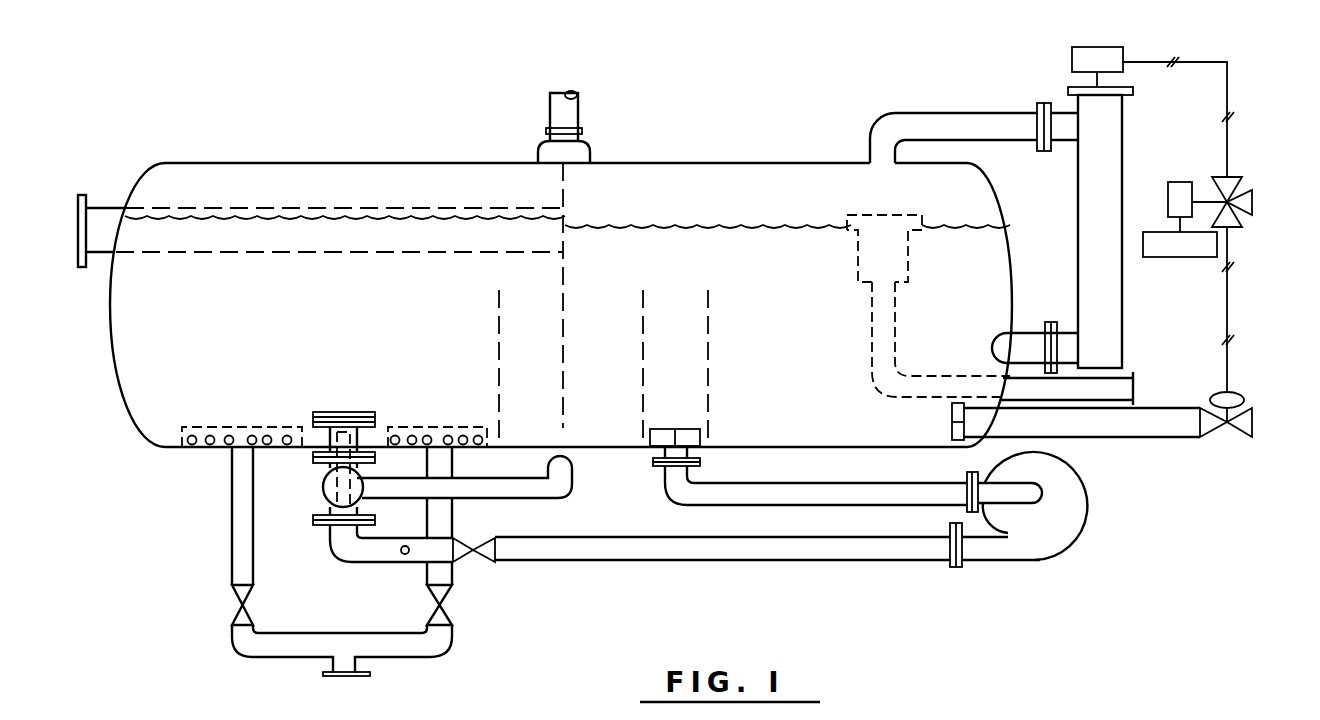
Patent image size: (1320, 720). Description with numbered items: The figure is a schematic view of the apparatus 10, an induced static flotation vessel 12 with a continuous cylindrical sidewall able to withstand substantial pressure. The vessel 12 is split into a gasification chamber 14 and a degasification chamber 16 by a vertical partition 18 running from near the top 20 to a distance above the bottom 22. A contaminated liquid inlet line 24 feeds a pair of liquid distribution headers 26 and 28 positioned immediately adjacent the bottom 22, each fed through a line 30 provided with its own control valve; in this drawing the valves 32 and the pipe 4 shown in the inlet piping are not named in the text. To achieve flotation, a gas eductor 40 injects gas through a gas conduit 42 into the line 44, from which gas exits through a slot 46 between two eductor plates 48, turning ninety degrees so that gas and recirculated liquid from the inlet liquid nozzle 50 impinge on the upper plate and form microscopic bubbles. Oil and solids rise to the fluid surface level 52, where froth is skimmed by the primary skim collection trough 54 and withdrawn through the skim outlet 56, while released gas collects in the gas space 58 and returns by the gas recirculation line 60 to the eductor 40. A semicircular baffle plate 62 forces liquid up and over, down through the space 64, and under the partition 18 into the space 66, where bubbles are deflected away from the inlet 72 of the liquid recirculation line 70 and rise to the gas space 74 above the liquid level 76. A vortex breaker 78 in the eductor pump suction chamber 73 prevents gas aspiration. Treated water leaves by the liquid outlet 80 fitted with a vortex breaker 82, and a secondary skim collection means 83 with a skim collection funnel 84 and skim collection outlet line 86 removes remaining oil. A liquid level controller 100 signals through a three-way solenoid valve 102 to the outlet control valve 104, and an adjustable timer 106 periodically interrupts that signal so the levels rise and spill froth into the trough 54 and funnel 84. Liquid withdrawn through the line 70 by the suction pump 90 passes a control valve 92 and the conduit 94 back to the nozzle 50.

The apparatus 10 is at (817, 106).
The induced static flotation vessel 12 is at (773, 162).
The gasification chamber 14 is at (303, 297).
The degasification chamber 16 is at (768, 327).
The vertical partition 18 is at (563, 270).
The top 20 is at (440, 163).
The bottom 22 is at (175, 447).
The contaminated liquid inlet line 24 is at (330, 670).
The liquid distribution header 26 is at (185, 427).
The liquid distribution header 28 is at (465, 425).
The line 30 is at (232, 490).
The valve 32 is at (232, 600).
The pipe 4 is at (452, 467).
The gas eductor 40 is at (346, 412).
The gas conduit 42 is at (323, 493).
The line 44 is at (352, 440).
The slot 46 is at (313, 420).
The eductor plates 48 is at (372, 412).
The inlet liquid nozzle 50 is at (313, 457).
The fluid surface level 52 is at (232, 206).
The primary skim collection trough 54 is at (292, 214).
The skim outlet 56 is at (112, 205).
The gas space 58 is at (414, 197).
The gas recirculation line 60 is at (575, 112).
The baffle plate 62 is at (494, 302).
The space 64 is at (518, 327).
The space 66 is at (591, 327).
The liquid recirculation line 70 is at (790, 483).
The inlet 72 is at (653, 465).
The eductor pump suction chamber 73 is at (666, 327).
The gas space 74 is at (706, 201).
The liquid level 76 is at (632, 222).
The vortex breaker 78 is at (690, 429).
The liquid outlet 80 is at (1105, 437).
The vortex breaker 82 is at (952, 420).
The secondary skim collection means 83 is at (862, 258).
The skim collection funnel 84 is at (893, 215).
The skim collection outlet line 86 is at (1133, 372).
The suction pump 90 is at (1080, 530).
The control valve 92 is at (475, 562).
The conduit 94 is at (356, 565).
The liquid level controller 100 is at (1125, 47).
The three-way solenoid valve 102 is at (1245, 182).
The outlet control valve 104 is at (1215, 437).
The adjustable timer 106 is at (1180, 257).